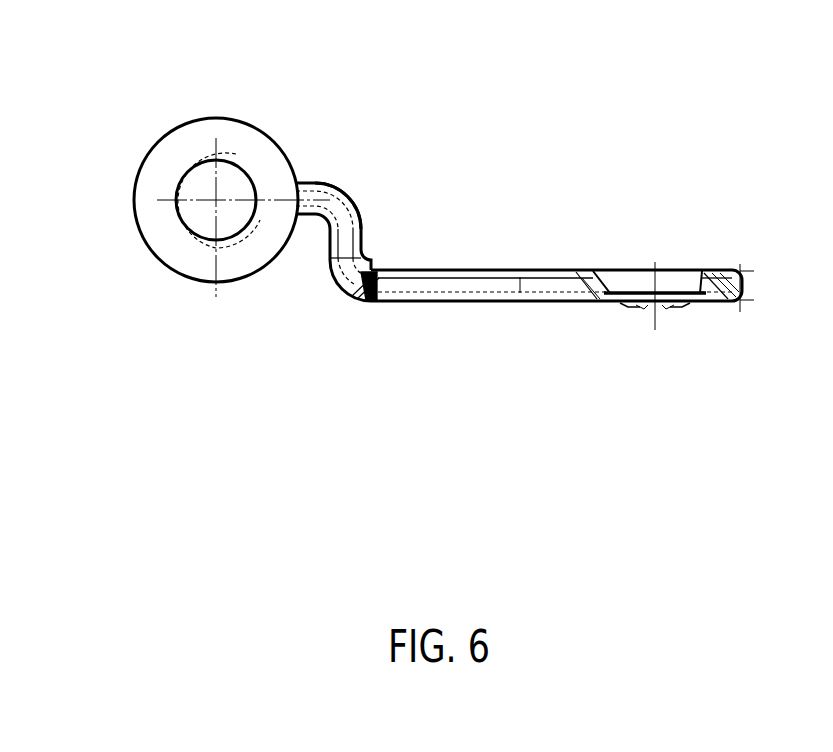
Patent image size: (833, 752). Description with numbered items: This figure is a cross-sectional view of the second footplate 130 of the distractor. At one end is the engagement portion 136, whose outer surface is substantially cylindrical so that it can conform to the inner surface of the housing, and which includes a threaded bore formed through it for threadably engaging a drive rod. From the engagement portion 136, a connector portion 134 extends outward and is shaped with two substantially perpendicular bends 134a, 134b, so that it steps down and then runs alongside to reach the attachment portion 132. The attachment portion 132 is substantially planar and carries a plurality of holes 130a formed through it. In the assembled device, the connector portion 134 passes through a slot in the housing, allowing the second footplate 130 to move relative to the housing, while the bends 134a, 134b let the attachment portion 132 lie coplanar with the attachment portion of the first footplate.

The second footplate 130 is at (657, 120).
The holes 130a is at (772, 288).
The attachment portion 132 is at (500, 304).
The connector portion 134 is at (337, 294).
The first bend 134a is at (366, 176).
The second bend 134b is at (368, 265).
The engagement portion 136 is at (264, 280).